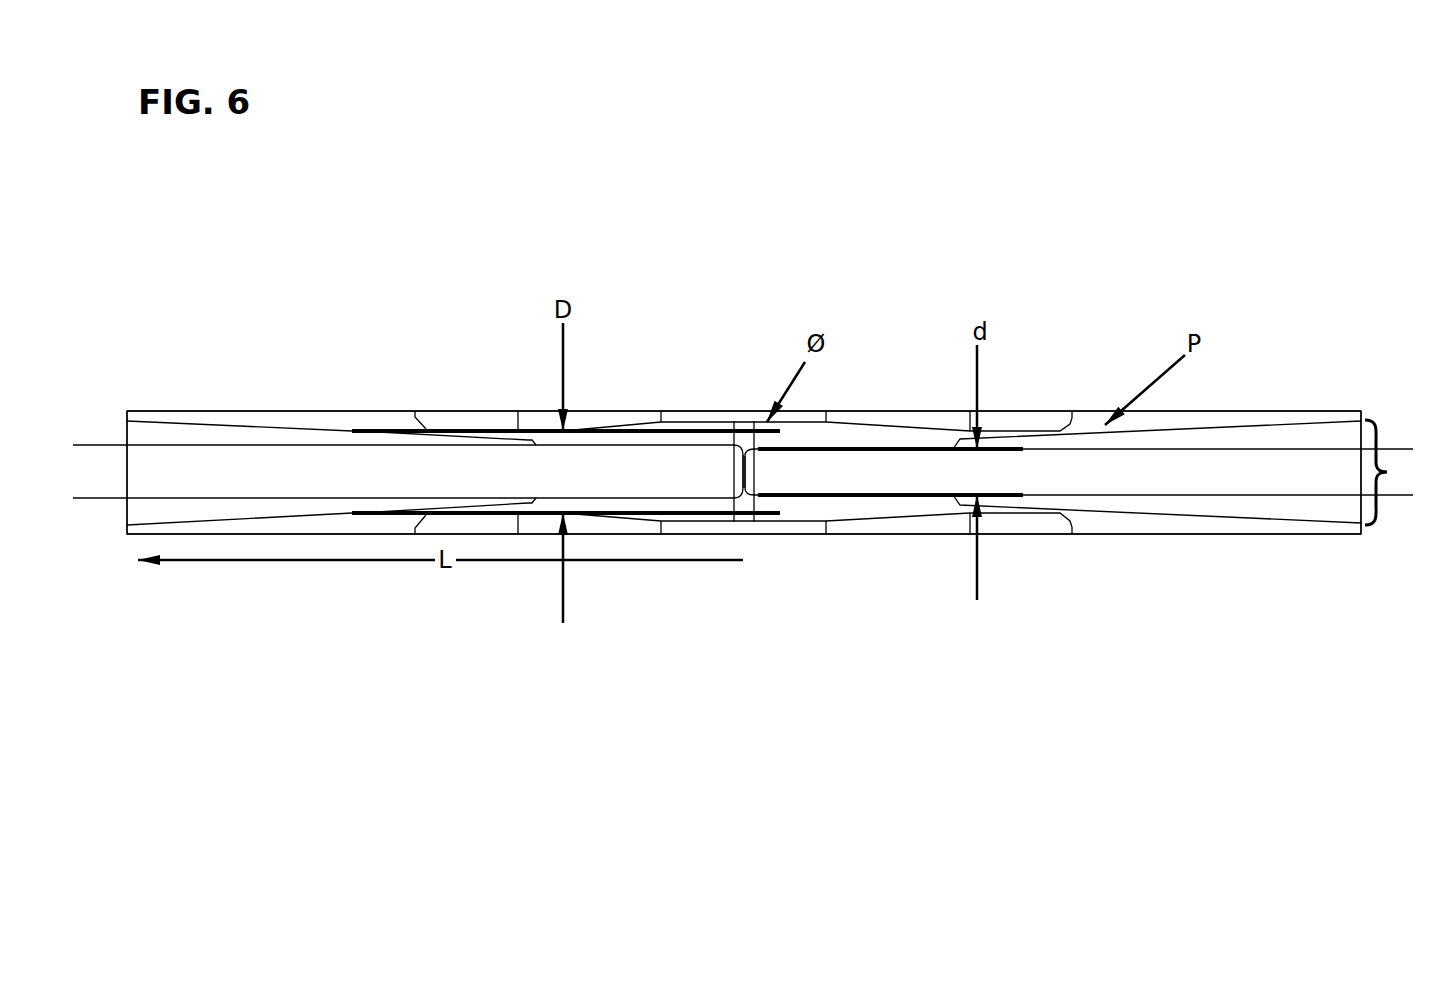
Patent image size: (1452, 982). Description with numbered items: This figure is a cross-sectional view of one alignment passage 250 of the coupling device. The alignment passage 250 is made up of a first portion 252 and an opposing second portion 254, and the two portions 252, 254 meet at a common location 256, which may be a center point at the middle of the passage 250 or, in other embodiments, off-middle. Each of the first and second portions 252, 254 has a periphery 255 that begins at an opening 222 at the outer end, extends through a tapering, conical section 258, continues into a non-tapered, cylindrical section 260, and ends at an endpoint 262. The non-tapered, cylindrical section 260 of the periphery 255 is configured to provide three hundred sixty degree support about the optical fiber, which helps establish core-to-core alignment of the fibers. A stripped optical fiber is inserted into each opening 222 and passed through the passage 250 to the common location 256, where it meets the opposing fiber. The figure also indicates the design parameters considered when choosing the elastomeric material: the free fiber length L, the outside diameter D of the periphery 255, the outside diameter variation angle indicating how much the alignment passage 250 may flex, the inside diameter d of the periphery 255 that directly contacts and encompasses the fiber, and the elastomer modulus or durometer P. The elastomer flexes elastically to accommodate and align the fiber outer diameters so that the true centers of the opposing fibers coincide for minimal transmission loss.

The opening 222 is at (127, 443).
The alignment passage 250 is at (848, 440).
The first portion 252 is at (370, 373).
The second portion 254 is at (1262, 388).
The periphery 255 is at (1400, 472).
The common location 256 is at (743, 494).
The tapering, conical section 258 is at (268, 512).
The non-tapered, cylindrical section 260 is at (657, 497).
The endpoint 262 is at (734, 513).